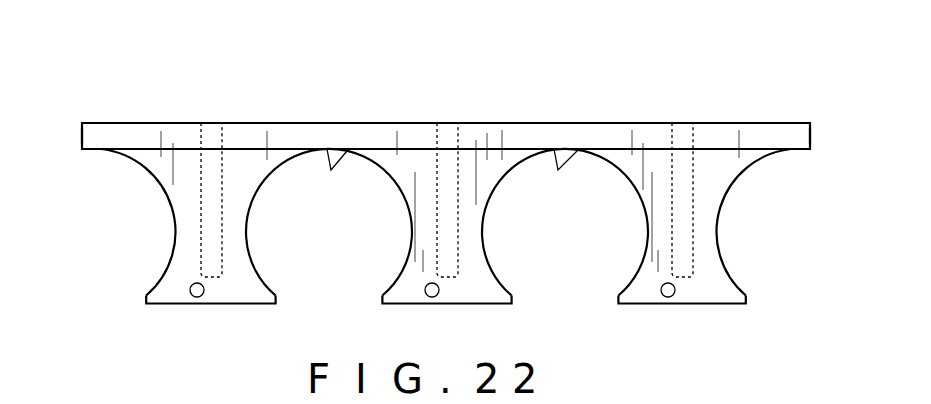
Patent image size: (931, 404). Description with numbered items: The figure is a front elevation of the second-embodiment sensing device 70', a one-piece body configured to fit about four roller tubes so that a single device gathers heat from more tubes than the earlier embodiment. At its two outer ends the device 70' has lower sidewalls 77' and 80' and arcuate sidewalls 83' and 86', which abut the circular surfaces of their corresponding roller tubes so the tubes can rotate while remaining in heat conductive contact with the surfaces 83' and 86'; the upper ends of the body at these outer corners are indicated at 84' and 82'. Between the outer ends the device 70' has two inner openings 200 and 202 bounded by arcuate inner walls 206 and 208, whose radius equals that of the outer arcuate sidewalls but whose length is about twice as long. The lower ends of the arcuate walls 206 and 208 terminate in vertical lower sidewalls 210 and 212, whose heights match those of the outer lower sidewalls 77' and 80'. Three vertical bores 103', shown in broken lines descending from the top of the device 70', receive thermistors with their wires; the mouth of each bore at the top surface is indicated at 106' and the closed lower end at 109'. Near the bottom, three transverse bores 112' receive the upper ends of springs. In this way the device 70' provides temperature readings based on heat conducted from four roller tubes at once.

The sensing device 70' is at (446, 86).
The first end of top wall 84' is at (78, 97).
The second end of top wall 82' is at (812, 105).
The arcuate sidewall 83' is at (138, 222).
The arcuate sidewall 86' is at (754, 222).
The lower sidewall 77' is at (174, 296).
The lower sidewall 80' is at (718, 288).
The vertical lower sidewall 210 is at (382, 297).
The vertical lower sidewall 212 is at (512, 300).
The inner opening 200 is at (327, 149).
The inner opening 202 is at (554, 149).
The arcuate inner wall 206 is at (247, 213).
The arcuate inner wall 208 is at (643, 207).
The vertical bore 103' is at (467, 171).
The slot opening 106' is at (408, 94).
The transverse bore 112' is at (406, 320).
The slot bottom 109' is at (488, 314).